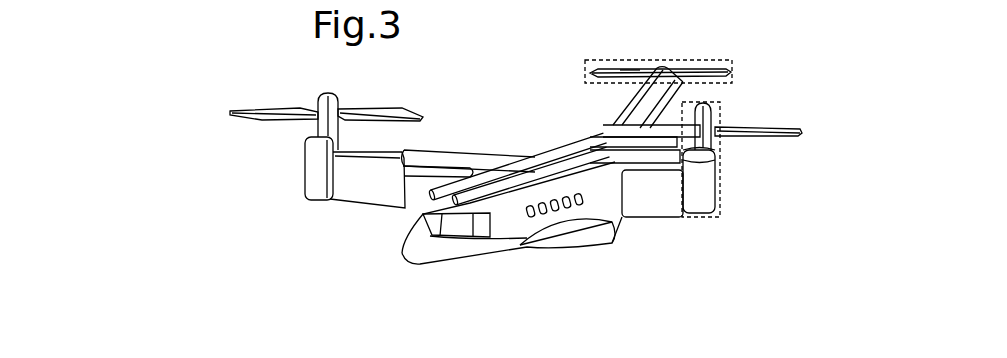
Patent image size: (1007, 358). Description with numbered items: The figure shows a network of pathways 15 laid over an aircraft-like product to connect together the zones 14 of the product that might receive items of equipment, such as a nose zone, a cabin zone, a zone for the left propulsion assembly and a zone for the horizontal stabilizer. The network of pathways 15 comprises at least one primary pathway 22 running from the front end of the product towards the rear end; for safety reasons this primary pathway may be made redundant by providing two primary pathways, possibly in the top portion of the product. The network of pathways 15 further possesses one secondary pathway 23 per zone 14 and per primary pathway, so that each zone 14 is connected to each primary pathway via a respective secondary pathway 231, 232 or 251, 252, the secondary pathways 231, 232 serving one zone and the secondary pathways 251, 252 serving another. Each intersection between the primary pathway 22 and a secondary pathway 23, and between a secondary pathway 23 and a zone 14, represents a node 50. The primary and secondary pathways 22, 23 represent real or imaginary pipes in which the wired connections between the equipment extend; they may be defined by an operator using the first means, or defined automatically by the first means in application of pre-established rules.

The zone 14 is at (735, 198).
The network of pathways 15 is at (400, 224).
The primary pathway 22 is at (388, 218).
The secondary pathway 23 is at (535, 125).
The node 50 is at (640, 88).
The secondary pathway 231 is at (650, 172).
The secondary pathway 232 is at (713, 112).
The secondary pathway 251 is at (610, 124).
The secondary pathway 252 is at (680, 83).